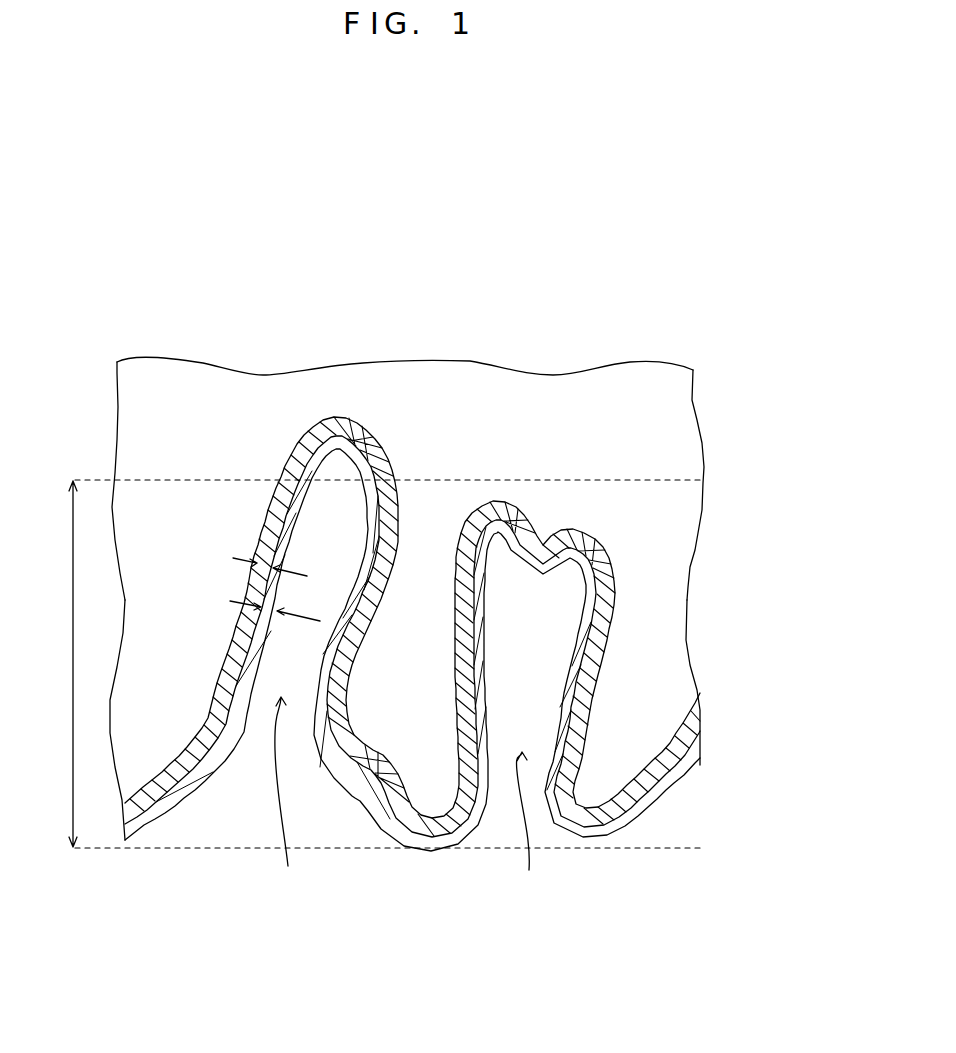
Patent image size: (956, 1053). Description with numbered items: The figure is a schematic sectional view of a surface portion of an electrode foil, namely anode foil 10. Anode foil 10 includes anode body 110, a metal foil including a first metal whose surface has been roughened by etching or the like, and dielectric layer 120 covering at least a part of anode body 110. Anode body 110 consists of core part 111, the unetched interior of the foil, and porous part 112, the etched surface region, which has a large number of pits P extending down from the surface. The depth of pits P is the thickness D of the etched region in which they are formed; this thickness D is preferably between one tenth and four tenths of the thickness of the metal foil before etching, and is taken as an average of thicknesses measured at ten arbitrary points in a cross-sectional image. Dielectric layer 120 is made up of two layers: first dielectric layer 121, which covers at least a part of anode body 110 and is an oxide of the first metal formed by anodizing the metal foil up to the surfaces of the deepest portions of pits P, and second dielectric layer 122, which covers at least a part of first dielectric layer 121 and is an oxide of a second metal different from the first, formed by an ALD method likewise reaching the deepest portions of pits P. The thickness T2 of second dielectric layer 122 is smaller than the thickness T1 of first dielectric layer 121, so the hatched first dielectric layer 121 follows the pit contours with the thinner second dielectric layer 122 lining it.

The anode foil 10 is at (410, 347).
The anode body 110 is at (767, 425).
The core part 111 is at (660, 422).
The porous part 112 is at (628, 672).
The dielectric layer 120 is at (767, 735).
The first dielectric layer 121 is at (668, 732).
The second dielectric layer 122 is at (666, 767).
The thickness of first dielectric layer T1 is at (255, 532).
The thickness of second dielectric layer T2 is at (255, 573).
The thickness of etched region D is at (377, 664).
The pits P is at (407, 797).